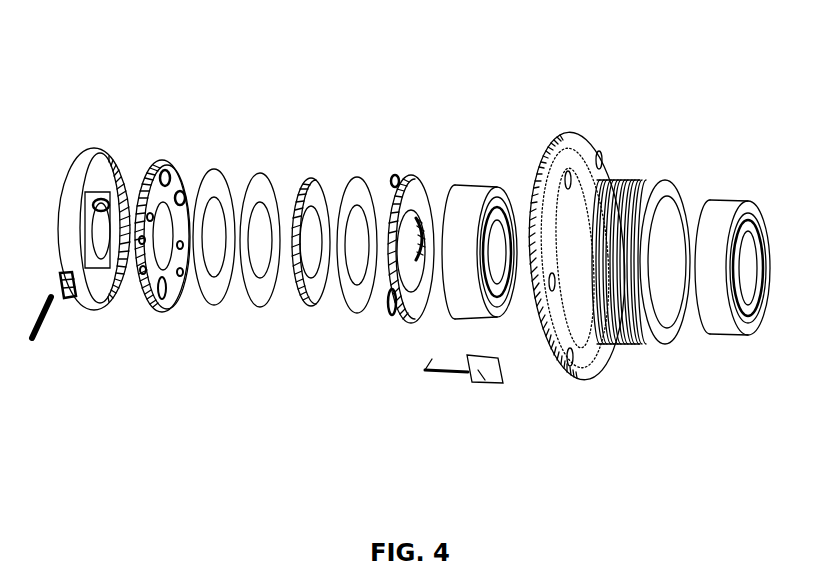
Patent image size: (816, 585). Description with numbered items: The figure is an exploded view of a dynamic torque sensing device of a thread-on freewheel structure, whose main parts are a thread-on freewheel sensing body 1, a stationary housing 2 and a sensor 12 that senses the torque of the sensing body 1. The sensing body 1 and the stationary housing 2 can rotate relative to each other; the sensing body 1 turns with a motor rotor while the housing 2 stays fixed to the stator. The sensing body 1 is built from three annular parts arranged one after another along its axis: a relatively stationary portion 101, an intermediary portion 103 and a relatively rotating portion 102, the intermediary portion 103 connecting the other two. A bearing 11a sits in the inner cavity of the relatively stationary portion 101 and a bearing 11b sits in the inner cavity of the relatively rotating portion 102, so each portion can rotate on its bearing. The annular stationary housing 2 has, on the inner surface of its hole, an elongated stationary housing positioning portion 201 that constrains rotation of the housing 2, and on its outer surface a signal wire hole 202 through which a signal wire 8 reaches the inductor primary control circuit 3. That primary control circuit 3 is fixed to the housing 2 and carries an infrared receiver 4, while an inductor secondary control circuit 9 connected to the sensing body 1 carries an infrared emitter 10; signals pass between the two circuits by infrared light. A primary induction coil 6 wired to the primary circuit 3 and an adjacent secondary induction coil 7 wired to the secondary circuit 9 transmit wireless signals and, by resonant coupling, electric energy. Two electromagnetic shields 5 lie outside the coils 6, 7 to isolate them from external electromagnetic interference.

The thread-on freewheel sensing body 1 is at (620, 256).
The thread-on freewheel sensing body relatively stationary portion 101 is at (556, 145).
The thread-on freewheel sensing body relatively rotating portion 102 is at (650, 180).
The thread-on freewheel sensing body intermediary portion 103 is at (594, 200).
The stationary housing 2 is at (83, 150).
The stationary housing positioning portion 201 is at (122, 195).
The signal wire hole 202 is at (80, 305).
The inductor primary control circuit 3 is at (177, 293).
The infrared receiver 4 is at (185, 192).
The electromagnetic shield 5 is at (214, 290).
The primary induction coil 6 is at (265, 283).
The secondary induction coil 7 is at (310, 290).
The signal wire 8 is at (47, 335).
The inductor secondary control circuit 9 is at (428, 203).
The infrared emitter 10 is at (400, 172).
The bearing 11a is at (477, 202).
The bearing 11b is at (735, 200).
The sensor 12 is at (485, 383).